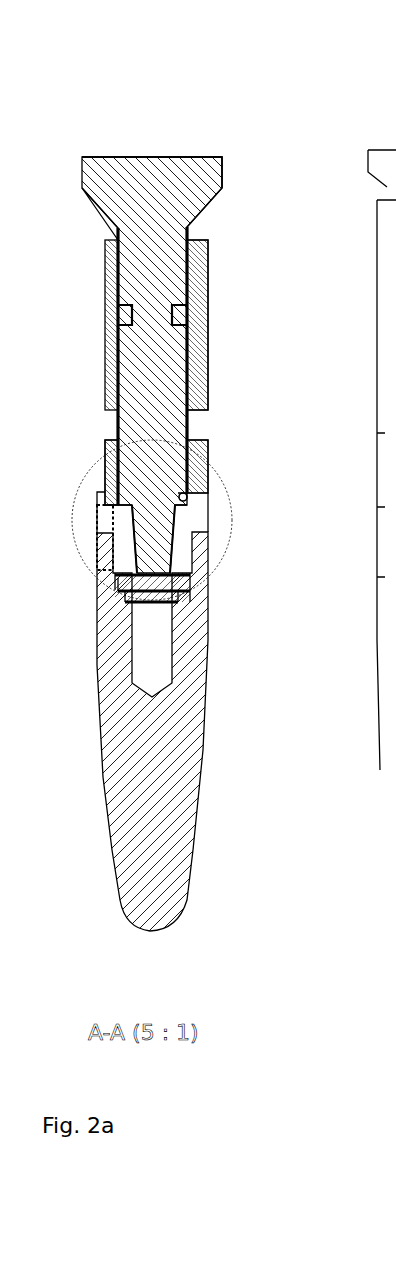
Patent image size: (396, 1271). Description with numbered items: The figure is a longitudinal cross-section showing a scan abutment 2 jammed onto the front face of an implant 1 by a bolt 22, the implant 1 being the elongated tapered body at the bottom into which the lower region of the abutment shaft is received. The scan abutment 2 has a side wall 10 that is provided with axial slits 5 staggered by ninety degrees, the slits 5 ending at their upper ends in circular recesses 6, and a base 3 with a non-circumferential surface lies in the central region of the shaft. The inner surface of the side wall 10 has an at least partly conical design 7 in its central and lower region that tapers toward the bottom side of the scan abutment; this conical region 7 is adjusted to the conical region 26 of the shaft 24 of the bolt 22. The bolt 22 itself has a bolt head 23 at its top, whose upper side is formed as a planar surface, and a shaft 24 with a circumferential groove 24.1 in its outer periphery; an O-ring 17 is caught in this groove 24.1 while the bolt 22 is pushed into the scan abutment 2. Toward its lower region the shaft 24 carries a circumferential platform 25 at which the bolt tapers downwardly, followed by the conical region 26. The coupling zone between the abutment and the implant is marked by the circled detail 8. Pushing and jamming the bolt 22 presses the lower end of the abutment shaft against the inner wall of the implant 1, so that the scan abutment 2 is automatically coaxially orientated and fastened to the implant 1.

The implant 1 is at (364, 771).
The scan abutment 2 is at (231, 291).
The base 3 is at (232, 499).
The axial slits 5 is at (207, 474).
The circular recesses 6 is at (233, 427).
The conical design 7 is at (97, 542).
The coupling region detail 8 is at (165, 520).
The side wall 10 is at (220, 258).
The O-ring 17 is at (200, 312).
The bolt 22 is at (175, 138).
The bolt head 23 is at (184, 180).
The shaft of the bolt 24 is at (128, 375).
The circumferential groove 24.1 is at (116, 317).
The platform 25 is at (206, 497).
The conical region 26 is at (192, 541).